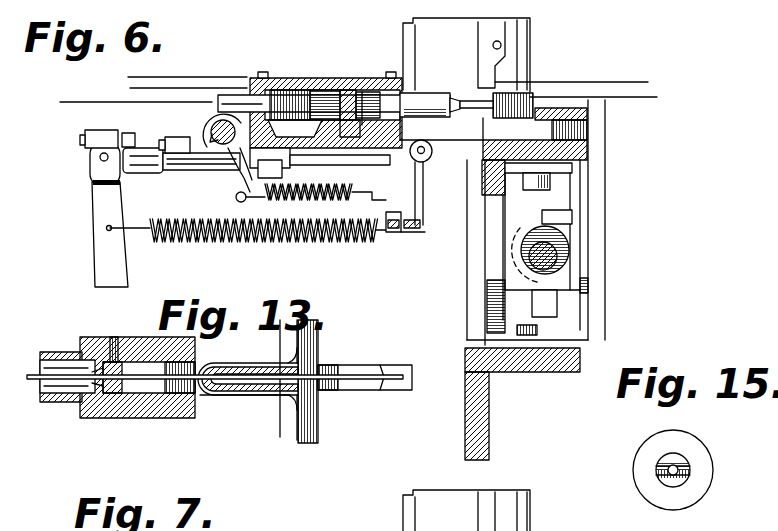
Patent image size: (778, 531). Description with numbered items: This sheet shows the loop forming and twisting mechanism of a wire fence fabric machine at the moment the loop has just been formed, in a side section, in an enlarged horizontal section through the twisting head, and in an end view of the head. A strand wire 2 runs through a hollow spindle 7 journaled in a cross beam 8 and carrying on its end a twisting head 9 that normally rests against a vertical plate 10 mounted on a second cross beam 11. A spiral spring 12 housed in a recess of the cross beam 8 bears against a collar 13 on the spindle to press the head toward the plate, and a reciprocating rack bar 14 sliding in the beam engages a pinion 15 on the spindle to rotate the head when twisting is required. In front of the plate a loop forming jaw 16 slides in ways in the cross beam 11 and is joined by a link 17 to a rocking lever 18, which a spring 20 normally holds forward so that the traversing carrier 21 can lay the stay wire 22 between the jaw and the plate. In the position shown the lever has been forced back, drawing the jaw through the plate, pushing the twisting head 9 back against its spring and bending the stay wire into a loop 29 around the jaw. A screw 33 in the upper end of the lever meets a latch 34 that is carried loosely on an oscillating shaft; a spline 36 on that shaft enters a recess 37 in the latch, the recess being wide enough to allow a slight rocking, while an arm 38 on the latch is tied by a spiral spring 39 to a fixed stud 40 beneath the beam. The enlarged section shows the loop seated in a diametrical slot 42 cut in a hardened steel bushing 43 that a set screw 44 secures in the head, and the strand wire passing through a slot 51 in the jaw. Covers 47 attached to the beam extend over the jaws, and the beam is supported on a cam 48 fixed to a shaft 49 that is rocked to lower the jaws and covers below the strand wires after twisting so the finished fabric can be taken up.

In FIG. 13, the strand wire 2 is at (58, 383).
In FIG. 6, the hollow spindle 7 is at (370, 92).
In FIG. 13, the hollow spindle 7 is at (56, 352).
In FIG. 6, the cross beam 8 is at (252, 82).
In FIG. 6, the twisting head 9 is at (425, 96).
In FIG. 13, the twisting head 9 is at (138, 345).
In FIG. 15, the twisting head 9 is at (703, 469).
In FIG. 6, the vertical plate 10 is at (478, 100).
In FIG. 13, the vertical plate 10 is at (280, 336).
In FIG. 6, the cross beam 11 is at (482, 178).
In FIG. 6, the spiral spring 12 is at (282, 92).
In FIG. 6, the collar 13 is at (314, 92).
In FIG. 6, the reciprocating rack bar 14 is at (362, 90).
In FIG. 6, the pinion 15 is at (344, 92).
In FIG. 6, the loop forming jaw 16 is at (455, 98).
In FIG. 13, the loop forming jaw 16 is at (232, 365).
In FIG. 6, the link 17 is at (203, 165).
In FIG. 6, the rocking lever 18 is at (95, 214).
In FIG. 6, the spring 20 is at (280, 242).
In FIG. 6, the traversing carrier 21 is at (493, 62).
In FIG. 13, the stay wire 22 is at (310, 340).
In FIG. 13, the loop 29 is at (230, 396).
In FIG. 6, the screw 33 is at (127, 134).
In FIG. 6, the latch 34 is at (168, 160).
In FIG. 6, the spline 36 is at (214, 128).
In FIG. 6, the recess 37 is at (195, 140).
In FIG. 6, the arm 38 is at (241, 182).
In FIG. 6, the spiral spring 39 is at (256, 203).
In FIG. 6, the fixed stud 40 is at (358, 200).
In FIG. 13, the diametrical slot 42 is at (178, 395).
In FIG. 15, the diametrical slot 42 is at (682, 477).
In FIG. 13, the hardened steel bushing 43 is at (113, 393).
In FIG. 15, the hardened steel bushing 43 is at (680, 462).
In FIG. 13, the set screw 44 is at (112, 340).
In FIG. 6, the cover 47 is at (520, 92).
In FIG. 6, the cam 48 is at (570, 258).
In FIG. 6, the shaft 49 is at (532, 236).
In FIG. 13, the slot 51 is at (250, 370).